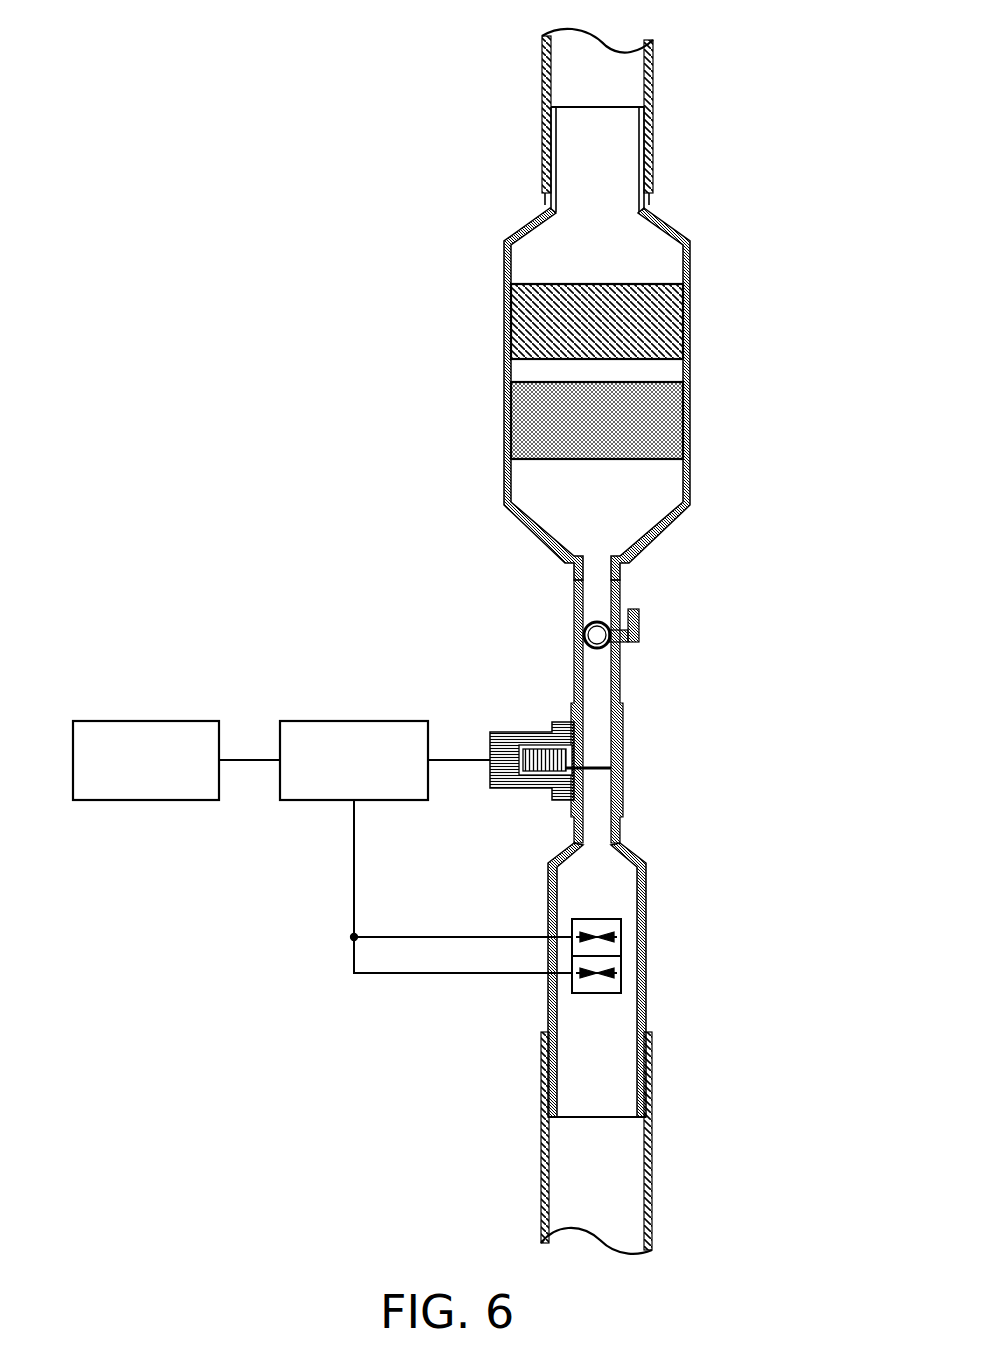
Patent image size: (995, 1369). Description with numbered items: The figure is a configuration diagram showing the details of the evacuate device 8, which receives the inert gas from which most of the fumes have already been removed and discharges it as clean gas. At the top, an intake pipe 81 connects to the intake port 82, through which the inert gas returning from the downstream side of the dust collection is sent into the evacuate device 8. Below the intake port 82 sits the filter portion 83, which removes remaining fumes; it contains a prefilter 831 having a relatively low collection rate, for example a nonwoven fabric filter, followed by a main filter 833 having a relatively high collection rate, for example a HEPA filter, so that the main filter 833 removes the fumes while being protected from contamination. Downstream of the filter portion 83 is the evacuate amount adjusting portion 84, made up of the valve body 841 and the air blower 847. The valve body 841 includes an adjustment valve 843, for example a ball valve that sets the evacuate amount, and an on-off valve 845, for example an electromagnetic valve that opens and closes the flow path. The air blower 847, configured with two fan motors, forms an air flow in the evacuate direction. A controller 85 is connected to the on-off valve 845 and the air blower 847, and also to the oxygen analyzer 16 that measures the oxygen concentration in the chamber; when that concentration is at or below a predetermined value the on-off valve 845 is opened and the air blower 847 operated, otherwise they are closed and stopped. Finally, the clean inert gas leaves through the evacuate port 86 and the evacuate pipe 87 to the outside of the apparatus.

The evacuate device 8 is at (734, 87).
The intake pipe 81 is at (543, 70).
The intake port 82 is at (612, 153).
The filter portion 83 is at (619, 394).
The prefilter 831 is at (527, 323).
The main filter 833 is at (530, 415).
The evacuate amount adjusting portion 84 is at (646, 786).
The valve body 841 is at (651, 715).
The adjustment valve 843 is at (583, 635).
The on-off valve 845 is at (531, 737).
The air blower 847 is at (620, 921).
The controller 85 is at (316, 720).
The oxygen analyzer 16 is at (101, 720).
The evacuate port 86 is at (612, 1098).
The evacuate pipe 87 is at (543, 1180).